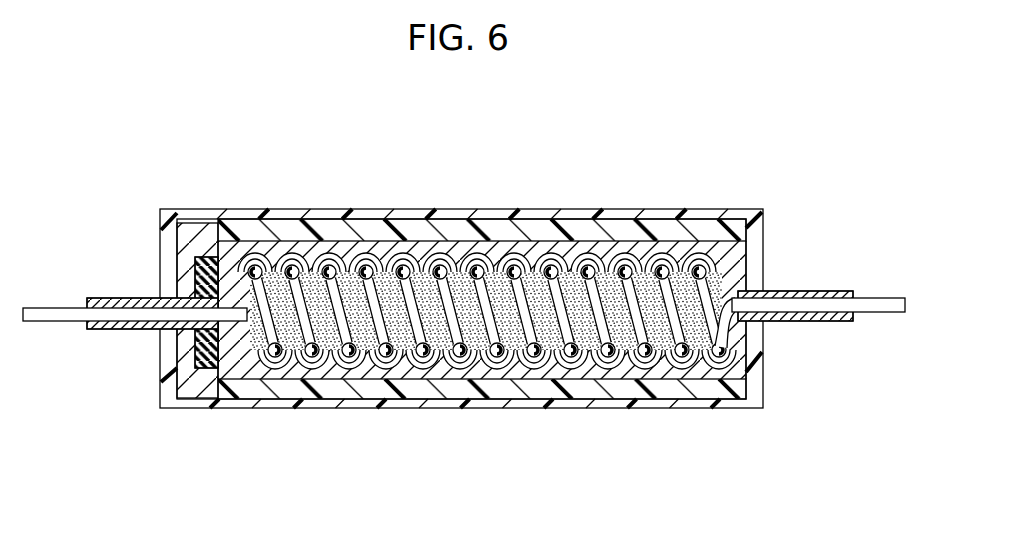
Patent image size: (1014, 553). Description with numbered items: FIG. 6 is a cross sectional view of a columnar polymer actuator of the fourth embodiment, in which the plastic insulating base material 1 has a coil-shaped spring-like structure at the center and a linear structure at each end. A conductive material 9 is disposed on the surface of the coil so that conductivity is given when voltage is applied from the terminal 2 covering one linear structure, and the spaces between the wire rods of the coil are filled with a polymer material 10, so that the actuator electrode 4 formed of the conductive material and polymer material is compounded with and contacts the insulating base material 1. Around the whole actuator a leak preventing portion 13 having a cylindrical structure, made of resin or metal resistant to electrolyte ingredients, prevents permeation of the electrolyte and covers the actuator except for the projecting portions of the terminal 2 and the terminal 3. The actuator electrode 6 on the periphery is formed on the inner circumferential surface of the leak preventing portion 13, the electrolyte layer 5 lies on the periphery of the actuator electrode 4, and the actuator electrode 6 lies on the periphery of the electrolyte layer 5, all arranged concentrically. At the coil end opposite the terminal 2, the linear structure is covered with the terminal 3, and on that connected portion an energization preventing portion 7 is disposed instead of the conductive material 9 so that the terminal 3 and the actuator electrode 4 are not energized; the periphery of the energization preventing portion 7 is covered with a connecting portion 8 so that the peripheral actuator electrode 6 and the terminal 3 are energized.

The insulating base material 1 is at (872, 299).
The terminal 2 is at (815, 292).
The terminal 3 is at (100, 299).
The actuator electrode 4 is at (730, 373).
The electrolyte layer 5 is at (737, 258).
The actuator electrode 6 is at (555, 232).
The energization preventing portion 7 is at (199, 370).
The connecting portion 8 is at (197, 232).
The conductive material 9 is at (590, 347).
The polymer material 10 is at (633, 350).
The leak preventing portion 13 is at (363, 403).